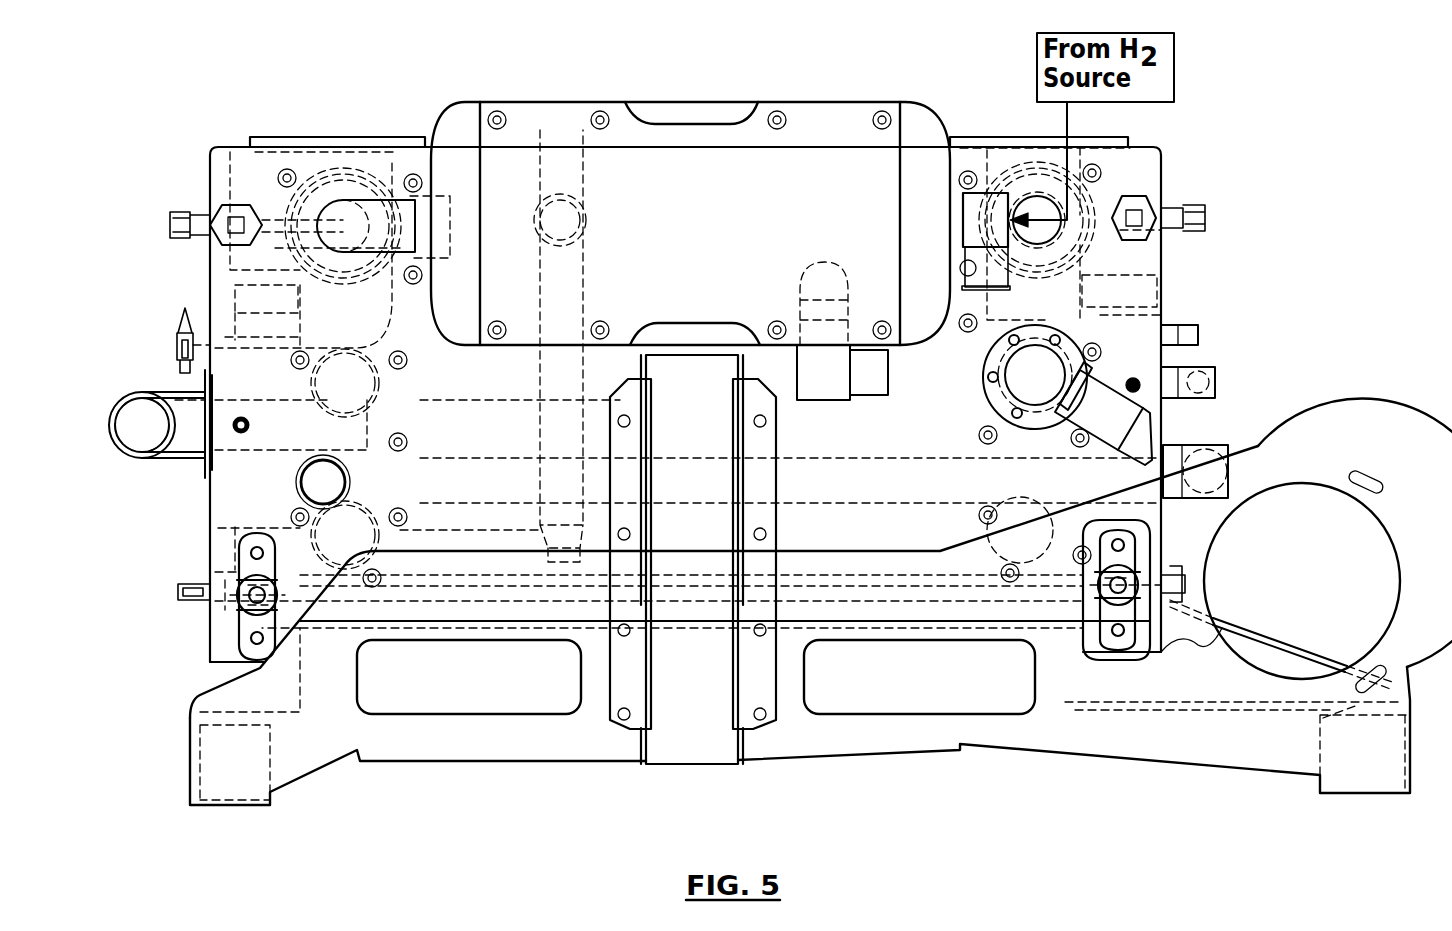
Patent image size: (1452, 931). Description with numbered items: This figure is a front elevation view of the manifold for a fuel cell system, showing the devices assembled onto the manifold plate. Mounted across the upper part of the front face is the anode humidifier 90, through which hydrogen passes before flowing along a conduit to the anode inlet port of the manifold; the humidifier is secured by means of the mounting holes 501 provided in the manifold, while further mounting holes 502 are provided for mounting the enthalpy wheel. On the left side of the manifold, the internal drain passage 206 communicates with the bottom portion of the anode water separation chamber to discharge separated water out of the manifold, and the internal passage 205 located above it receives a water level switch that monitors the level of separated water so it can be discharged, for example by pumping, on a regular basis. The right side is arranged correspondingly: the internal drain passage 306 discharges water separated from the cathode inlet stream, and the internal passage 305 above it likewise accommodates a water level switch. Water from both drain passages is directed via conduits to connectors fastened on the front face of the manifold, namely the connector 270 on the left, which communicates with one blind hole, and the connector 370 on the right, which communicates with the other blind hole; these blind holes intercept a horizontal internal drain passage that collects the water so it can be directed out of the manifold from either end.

The anode humidifier 90 is at (810, 123).
The mounting holes 501 is at (605, 113).
The mounting holes 502 is at (767, 420).
The internal passage 205 is at (210, 290).
The internal drain passage 206 is at (210, 308).
The connector 270 is at (250, 645).
The internal passage 305 is at (1165, 284).
The internal drain passage 306 is at (1165, 324).
The connector 370 is at (1228, 642).